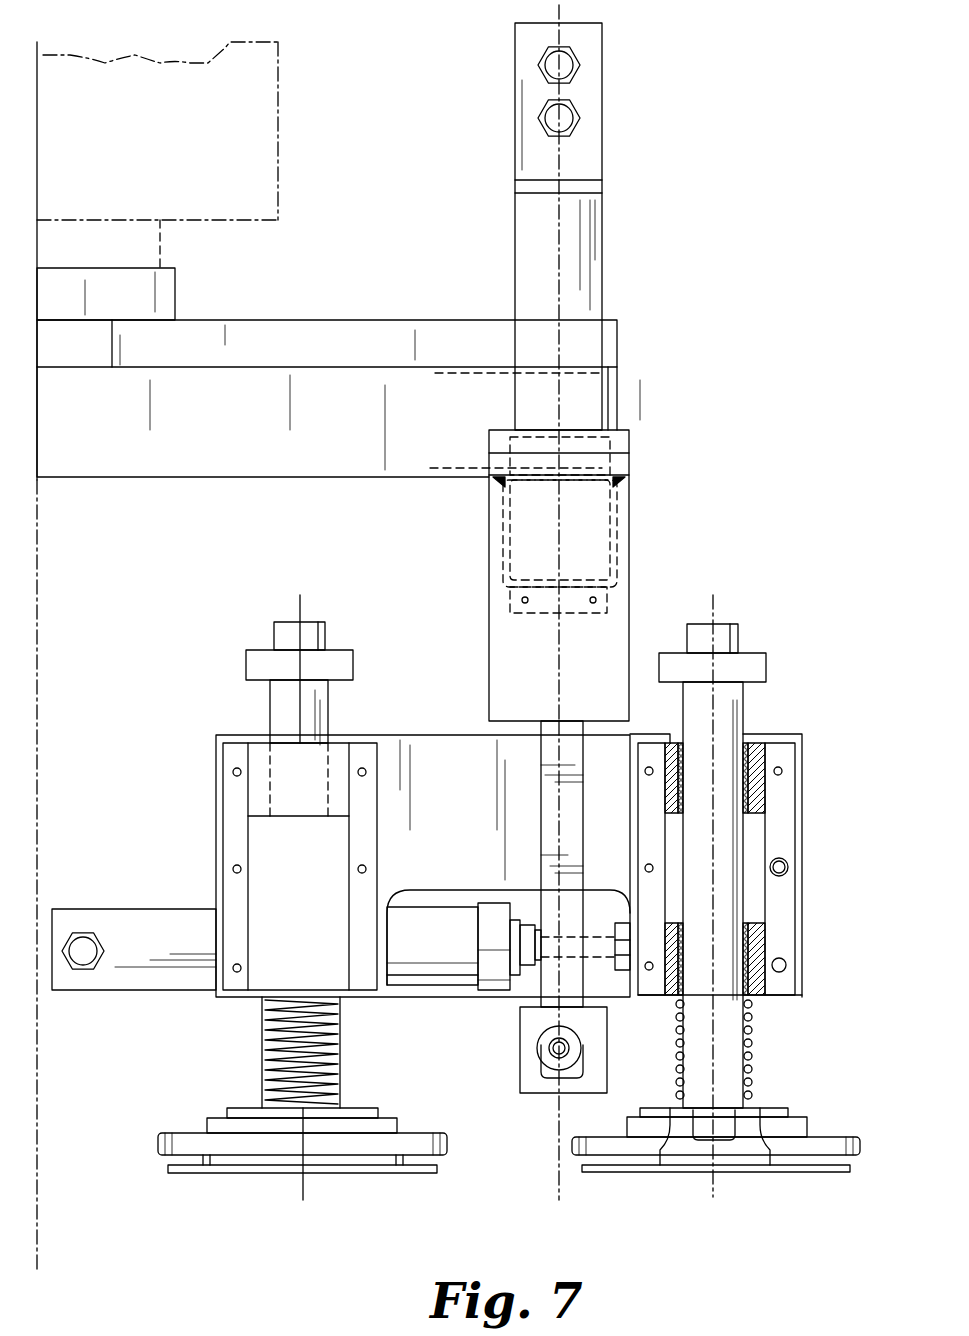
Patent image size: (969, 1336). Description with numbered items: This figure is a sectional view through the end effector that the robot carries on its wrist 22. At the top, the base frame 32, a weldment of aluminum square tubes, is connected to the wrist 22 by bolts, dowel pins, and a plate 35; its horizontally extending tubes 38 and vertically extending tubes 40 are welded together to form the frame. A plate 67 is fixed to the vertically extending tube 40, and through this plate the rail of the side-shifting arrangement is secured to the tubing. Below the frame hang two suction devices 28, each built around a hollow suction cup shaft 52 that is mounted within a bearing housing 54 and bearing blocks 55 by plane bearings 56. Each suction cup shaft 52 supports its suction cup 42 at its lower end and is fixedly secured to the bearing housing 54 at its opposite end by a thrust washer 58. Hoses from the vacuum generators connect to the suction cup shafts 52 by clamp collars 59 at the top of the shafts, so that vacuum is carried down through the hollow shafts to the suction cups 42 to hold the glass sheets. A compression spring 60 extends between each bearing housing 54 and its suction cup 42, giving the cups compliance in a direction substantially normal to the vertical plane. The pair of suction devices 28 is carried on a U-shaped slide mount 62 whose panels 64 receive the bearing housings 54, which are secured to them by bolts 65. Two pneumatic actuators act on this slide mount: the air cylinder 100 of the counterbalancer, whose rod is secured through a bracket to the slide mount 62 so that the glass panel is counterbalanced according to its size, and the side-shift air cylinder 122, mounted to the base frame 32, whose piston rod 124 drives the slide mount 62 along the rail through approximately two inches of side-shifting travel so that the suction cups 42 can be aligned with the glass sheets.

The wrist 22 is at (282, 98).
The plate 35 is at (178, 292).
The base frame 32 is at (363, 316).
The horizontally extending tubes 38 is at (195, 480).
The vertically extending tubes 40 is at (617, 505).
The plate 67 is at (620, 592).
The clamp collar 59 is at (350, 652).
The suction cup shaft 52 is at (330, 703).
The thrust washer 58 is at (760, 745).
The bearing housing 54 is at (378, 843).
The panels 64 is at (216, 830).
The bearing blocks 55 is at (765, 782).
The plane bearings 56 is at (755, 805).
The bolts 65 is at (788, 867).
The slide mount 62 is at (455, 895).
The air cylinder 122 is at (403, 985).
The piston rod 124 is at (603, 960).
The air cylinder 100 is at (540, 1075).
The compression spring 60 is at (340, 1062).
The suction devices 28 is at (172, 1133).
The suction cup 42 is at (585, 1130).